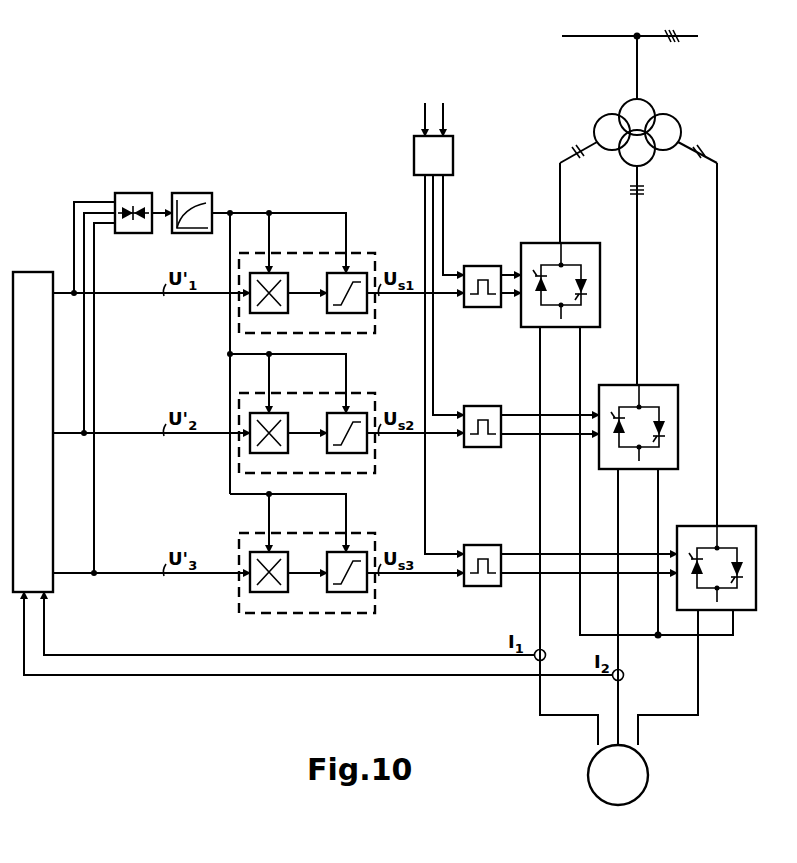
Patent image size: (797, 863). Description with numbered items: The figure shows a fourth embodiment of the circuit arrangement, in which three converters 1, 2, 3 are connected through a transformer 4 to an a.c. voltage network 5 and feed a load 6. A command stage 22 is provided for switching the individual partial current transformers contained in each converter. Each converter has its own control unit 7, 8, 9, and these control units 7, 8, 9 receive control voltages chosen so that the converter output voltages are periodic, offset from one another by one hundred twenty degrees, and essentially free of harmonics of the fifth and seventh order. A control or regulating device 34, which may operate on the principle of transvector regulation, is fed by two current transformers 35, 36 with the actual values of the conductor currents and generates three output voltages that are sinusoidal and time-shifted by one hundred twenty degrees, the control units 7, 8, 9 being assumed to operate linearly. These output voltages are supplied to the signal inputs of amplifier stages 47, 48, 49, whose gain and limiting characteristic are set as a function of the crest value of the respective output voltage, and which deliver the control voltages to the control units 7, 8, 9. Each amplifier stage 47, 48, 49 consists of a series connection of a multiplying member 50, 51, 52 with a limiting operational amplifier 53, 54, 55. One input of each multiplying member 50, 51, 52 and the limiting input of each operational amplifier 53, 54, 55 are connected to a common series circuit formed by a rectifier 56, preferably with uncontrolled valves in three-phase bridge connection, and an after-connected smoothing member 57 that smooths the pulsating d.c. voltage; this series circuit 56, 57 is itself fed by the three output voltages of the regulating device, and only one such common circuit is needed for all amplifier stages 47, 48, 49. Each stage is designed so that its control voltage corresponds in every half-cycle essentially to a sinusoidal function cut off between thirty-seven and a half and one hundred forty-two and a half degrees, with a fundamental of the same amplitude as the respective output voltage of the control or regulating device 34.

The converter 1 is at (576, 243).
The converter 2 is at (659, 387).
The converter 3 is at (735, 526).
The transformer 4 is at (648, 108).
The a.c. voltage network 5 is at (570, 33).
The load 6 is at (648, 775).
The control unit 7 is at (472, 266).
The control unit 8 is at (474, 406).
The control unit 9 is at (472, 545).
The command stage 22 is at (453, 156).
The control or regulating device 34 is at (44, 507).
The current transformer 35 is at (546, 653).
The current transformer 36 is at (624, 673).
The amplifier stage 47 is at (306, 277).
The amplifier stage 48 is at (306, 417).
The amplifier stage 49 is at (306, 557).
The multiplying member 50 is at (262, 273).
The multiplying member 51 is at (262, 413).
The multiplying member 52 is at (262, 552).
The limiting operational amplifier 53 is at (340, 273).
The limiting operational amplifier 54 is at (340, 413).
The limiting operational amplifier 55 is at (340, 552).
The rectifier 56 is at (133, 193).
The smoothing member 57 is at (189, 193).